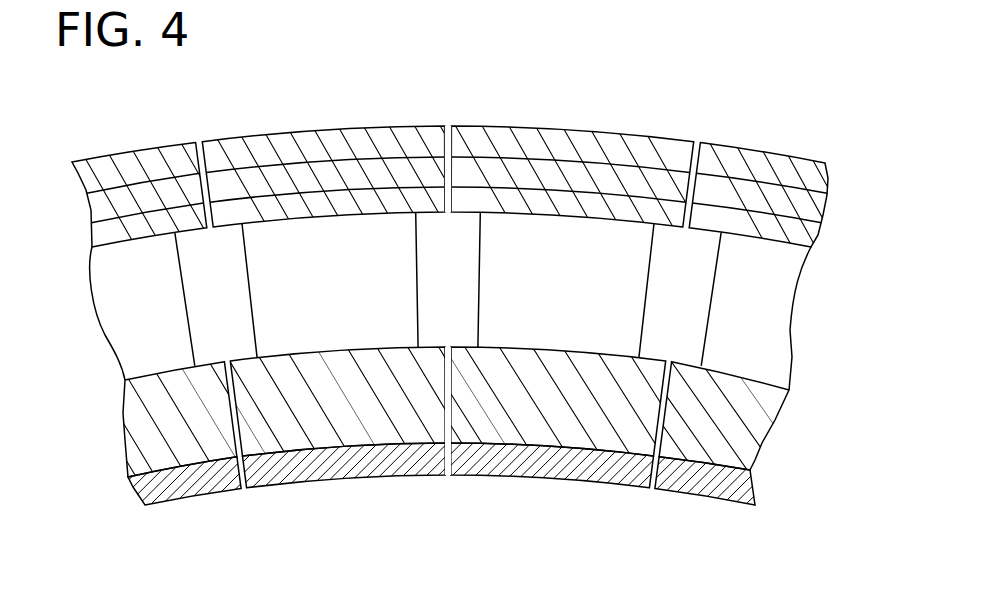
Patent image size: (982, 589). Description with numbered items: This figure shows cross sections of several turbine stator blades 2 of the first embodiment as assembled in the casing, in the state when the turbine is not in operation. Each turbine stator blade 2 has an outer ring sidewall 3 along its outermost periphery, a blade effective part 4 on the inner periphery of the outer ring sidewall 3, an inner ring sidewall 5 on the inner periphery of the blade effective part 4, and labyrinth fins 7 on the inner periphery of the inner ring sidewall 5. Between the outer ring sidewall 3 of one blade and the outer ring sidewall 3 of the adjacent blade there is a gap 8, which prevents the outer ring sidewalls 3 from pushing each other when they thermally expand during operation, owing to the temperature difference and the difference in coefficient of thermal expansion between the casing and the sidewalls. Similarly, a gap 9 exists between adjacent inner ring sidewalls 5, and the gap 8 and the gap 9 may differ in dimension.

The turbine stator blade 2 is at (315, 110).
The outer ring sidewall 3 is at (110, 207).
The blade effective part 4 is at (126, 315).
The inner ring sidewall 5 is at (145, 437).
The labyrinth fins 7 is at (152, 487).
The gap 8 is at (450, 125).
The gap 9 is at (447, 476).